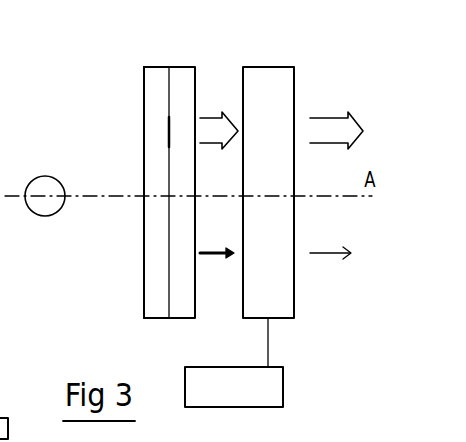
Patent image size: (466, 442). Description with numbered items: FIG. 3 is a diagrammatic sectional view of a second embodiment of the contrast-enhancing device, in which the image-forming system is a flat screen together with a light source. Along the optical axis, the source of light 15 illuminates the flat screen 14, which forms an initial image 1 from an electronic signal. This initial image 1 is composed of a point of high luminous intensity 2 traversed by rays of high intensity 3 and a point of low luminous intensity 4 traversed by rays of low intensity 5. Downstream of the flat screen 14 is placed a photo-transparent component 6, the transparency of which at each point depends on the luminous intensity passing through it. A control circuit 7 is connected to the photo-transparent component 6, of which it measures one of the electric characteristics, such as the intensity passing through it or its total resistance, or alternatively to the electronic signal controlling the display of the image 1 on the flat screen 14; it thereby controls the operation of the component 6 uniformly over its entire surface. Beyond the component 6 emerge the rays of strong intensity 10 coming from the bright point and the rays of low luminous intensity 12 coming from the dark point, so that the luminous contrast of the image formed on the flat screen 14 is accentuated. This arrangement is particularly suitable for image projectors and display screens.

The initial image 1 is at (168, 217).
The point of high luminous intensity 2 is at (170, 128).
The rays of high intensity 3 is at (213, 123).
The point of low luminous intensity 4 is at (168, 266).
The rays of low intensity 5 is at (212, 257).
The photo-transparent component 6 is at (284, 309).
The control circuit 7 is at (276, 390).
The rays of strong intensity 10 is at (325, 123).
The rays of low luminous intensity 12 is at (330, 255).
The flat screen 14 is at (158, 77).
The source of light 15 is at (48, 185).